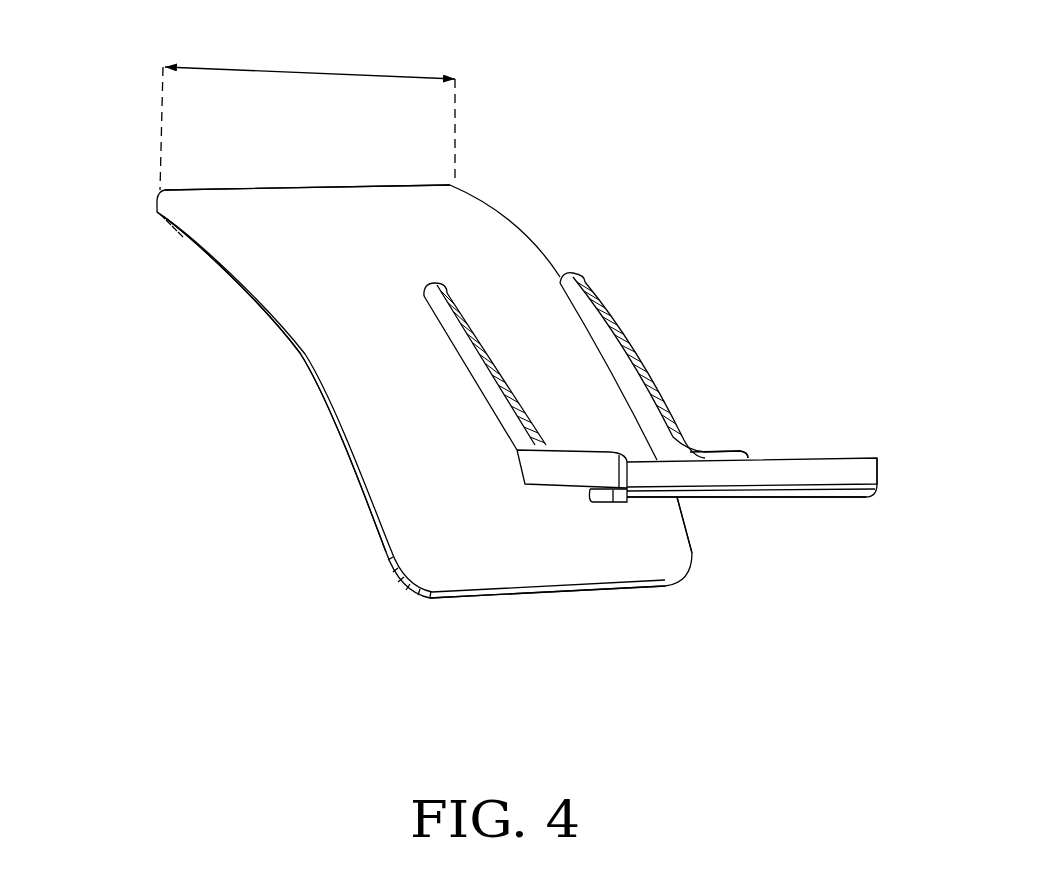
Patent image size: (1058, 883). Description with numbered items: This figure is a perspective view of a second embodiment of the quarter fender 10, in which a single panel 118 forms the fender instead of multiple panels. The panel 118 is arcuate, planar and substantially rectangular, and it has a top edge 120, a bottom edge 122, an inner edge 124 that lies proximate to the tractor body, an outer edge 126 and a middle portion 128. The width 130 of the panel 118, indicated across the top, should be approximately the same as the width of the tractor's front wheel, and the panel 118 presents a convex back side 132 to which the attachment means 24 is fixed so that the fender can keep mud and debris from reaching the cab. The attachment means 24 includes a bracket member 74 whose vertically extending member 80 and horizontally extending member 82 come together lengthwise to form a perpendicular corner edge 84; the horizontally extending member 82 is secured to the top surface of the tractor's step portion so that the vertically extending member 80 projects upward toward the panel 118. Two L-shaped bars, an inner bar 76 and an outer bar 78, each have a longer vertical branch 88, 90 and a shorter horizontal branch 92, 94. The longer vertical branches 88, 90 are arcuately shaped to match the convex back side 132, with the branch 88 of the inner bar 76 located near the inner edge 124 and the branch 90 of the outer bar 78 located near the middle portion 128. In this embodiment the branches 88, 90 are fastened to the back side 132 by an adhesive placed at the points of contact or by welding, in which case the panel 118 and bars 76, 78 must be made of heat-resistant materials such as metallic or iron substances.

The quarter fender 10 is at (509, 354).
The attachment means 24 is at (741, 516).
The bracket member 74 is at (800, 468).
The inner bar 76 is at (650, 408).
The outer bar 78 is at (540, 472).
The vertically extending member 80 is at (871, 471).
The horizontally extending member 82 is at (600, 501).
The perpendicular corner edge 84 is at (823, 504).
The longer vertical branch 88 is at (618, 341).
The longer vertical branch 90 is at (471, 352).
The shorter horizontal branch 92 is at (731, 447).
The shorter horizontal branch 94 is at (572, 476).
The panel 118 is at (421, 416).
The top edge 120 is at (313, 182).
The bottom edge 122 is at (556, 596).
The inner edge 124 is at (518, 223).
The outer edge 126 is at (317, 392).
The middle portion 128 is at (412, 251).
The width 130 is at (308, 72).
The convex back side 132 is at (343, 255).